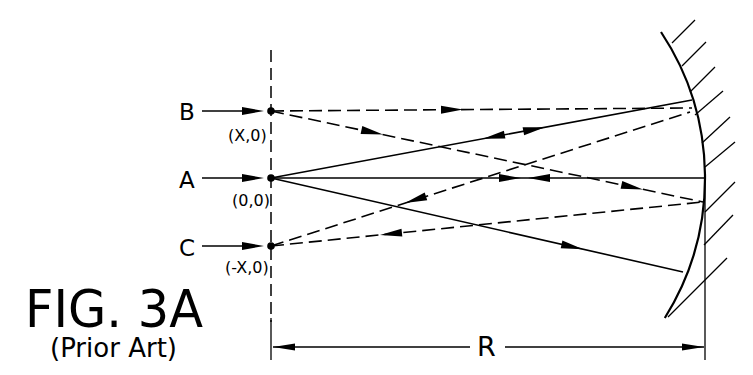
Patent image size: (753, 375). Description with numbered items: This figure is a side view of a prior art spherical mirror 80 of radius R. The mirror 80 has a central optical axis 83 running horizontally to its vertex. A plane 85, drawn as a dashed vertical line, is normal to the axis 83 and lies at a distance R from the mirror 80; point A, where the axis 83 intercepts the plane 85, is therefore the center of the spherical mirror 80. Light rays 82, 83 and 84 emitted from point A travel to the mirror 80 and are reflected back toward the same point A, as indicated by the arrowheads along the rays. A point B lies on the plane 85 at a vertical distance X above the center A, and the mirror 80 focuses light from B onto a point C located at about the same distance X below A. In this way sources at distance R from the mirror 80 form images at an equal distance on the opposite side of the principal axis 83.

The spherical mirror 80 is at (676, 53).
The light ray 82 is at (473, 140).
The central optical axis 83 is at (637, 177).
The light ray 84 is at (612, 253).
The plane 85 is at (270, 80).